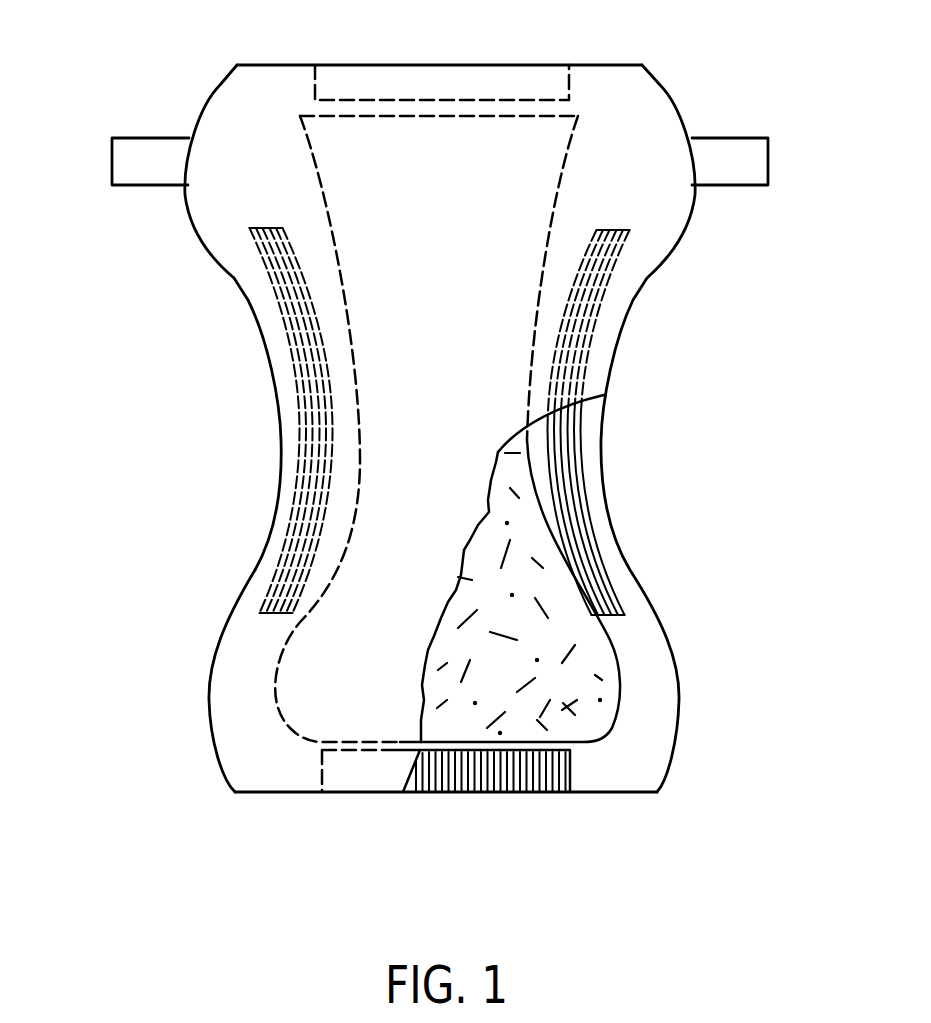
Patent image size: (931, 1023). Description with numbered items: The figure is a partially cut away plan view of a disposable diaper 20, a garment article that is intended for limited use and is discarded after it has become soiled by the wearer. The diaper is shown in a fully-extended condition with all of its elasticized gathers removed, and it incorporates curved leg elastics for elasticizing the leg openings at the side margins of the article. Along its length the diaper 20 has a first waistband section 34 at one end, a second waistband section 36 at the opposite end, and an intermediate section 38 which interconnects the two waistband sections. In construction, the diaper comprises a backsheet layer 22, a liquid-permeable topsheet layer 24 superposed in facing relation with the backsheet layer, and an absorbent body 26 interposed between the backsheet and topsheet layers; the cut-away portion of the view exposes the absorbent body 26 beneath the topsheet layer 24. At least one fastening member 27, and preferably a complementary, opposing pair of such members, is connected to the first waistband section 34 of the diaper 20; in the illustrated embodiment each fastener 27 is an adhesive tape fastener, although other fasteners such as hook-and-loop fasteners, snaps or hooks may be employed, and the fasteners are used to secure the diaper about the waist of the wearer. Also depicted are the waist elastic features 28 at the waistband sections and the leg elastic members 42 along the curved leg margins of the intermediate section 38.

The disposable diaper 20 is at (445, 436).
The backsheet layer 22 is at (672, 641).
The liquid-permeable topsheet layer 24 is at (408, 707).
The absorbent body 26 is at (582, 703).
The fastening member 27 is at (138, 167).
The elastic waist feature 28 is at (510, 82).
The first waistband section 34 is at (237, 108).
The second waistband section 36 is at (232, 748).
The intermediate section 38 is at (288, 379).
The leg elastic members 42 is at (298, 500).